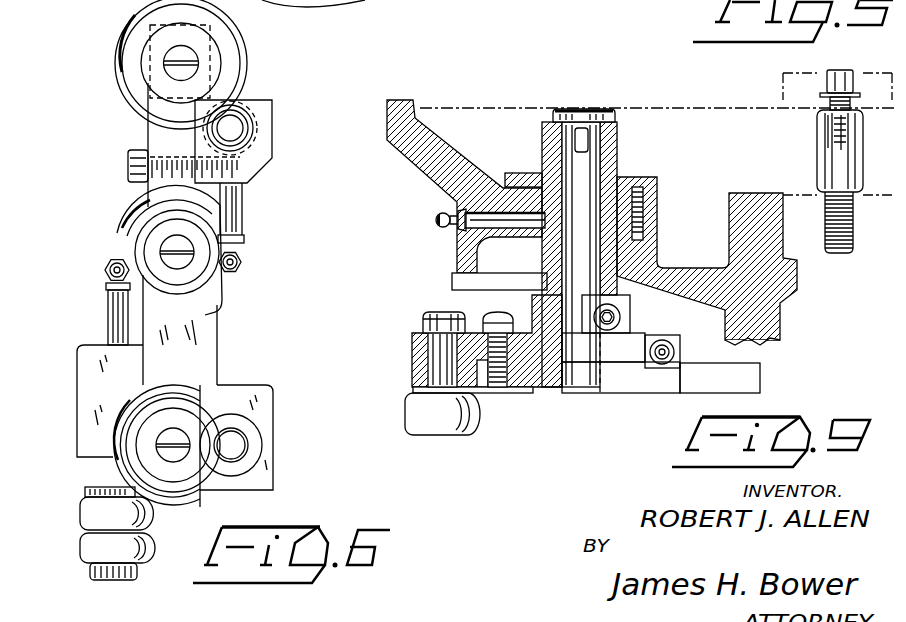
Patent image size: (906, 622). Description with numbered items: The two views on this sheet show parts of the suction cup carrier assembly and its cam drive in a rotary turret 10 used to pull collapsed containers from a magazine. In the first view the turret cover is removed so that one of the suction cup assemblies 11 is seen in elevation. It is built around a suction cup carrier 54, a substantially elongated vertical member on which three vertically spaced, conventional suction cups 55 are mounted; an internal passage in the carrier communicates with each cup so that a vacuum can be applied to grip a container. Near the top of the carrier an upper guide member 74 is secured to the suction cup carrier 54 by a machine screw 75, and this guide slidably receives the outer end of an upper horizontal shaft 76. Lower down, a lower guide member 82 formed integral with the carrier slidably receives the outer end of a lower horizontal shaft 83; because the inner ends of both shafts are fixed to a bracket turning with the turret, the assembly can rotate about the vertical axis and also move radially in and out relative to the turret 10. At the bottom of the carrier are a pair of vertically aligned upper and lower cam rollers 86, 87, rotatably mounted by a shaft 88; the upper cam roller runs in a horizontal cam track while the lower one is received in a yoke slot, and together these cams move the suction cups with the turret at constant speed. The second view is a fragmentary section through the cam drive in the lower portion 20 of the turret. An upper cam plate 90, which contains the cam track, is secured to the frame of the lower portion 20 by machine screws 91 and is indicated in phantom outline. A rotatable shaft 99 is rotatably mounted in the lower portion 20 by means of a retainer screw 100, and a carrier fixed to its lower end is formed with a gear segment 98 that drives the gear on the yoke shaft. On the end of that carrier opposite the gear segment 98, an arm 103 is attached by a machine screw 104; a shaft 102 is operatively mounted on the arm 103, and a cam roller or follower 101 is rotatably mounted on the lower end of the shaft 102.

In FIG. 9, the rotary turret 10 is at (410, 170).
In FIG. 6, the suction cup assembly 11 is at (138, 122).
In FIG. 9, the lower portion of the turret 20 is at (440, 187).
In FIG. 6, the suction cup carrier 54 is at (198, 360).
In FIG. 6, the suction cup 55 is at (230, 73).
In FIG. 6, the upper guide member 74 is at (267, 152).
In FIG. 6, the machine screw 75 is at (132, 163).
In FIG. 6, the upper horizontal shaft 76 is at (240, 130).
In FIG. 6, the lower guide member 82 is at (270, 385).
In FIG. 6, the lower horizontal shaft 83 is at (240, 445).
In FIG. 6, the upper cam roller 86 is at (87, 518).
In FIG. 6, the lower cam roller 87 is at (82, 550).
In FIG. 6, the shaft 88 is at (105, 583).
In FIG. 9, the upper cam plate 90 is at (785, 80).
In FIG. 9, the machine screw 91 is at (838, 80).
In FIG. 9, the gear segment 98 is at (753, 380).
In FIG. 9, the rotatable shaft 99 is at (592, 163).
In FIG. 9, the retainer screw 100 is at (603, 110).
In FIG. 9, the cam roller 101 is at (420, 420).
In FIG. 9, the shaft 102 is at (430, 352).
In FIG. 9, the arm 103 is at (422, 372).
In FIG. 9, the machine screw 104 is at (495, 312).